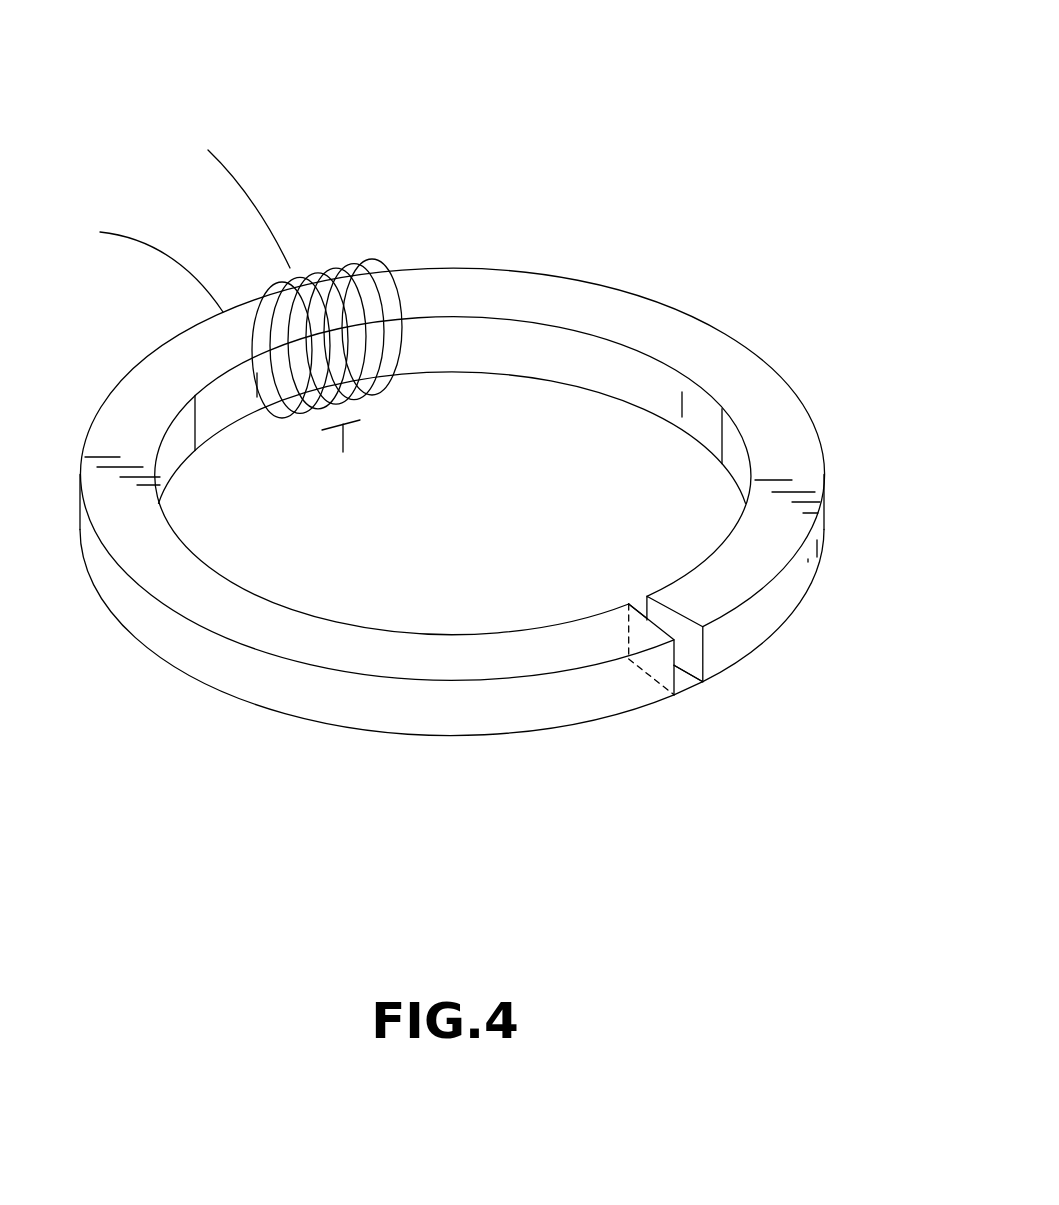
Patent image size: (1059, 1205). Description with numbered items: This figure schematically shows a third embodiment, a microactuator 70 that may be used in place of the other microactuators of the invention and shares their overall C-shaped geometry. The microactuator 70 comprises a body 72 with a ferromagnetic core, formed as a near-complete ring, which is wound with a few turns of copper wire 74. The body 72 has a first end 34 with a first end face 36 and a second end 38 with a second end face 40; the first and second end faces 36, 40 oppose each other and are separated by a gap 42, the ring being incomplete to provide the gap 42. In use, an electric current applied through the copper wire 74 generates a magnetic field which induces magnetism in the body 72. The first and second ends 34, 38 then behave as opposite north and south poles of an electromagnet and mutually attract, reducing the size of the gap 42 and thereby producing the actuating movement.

The microactuator 70 is at (499, 424).
The body 72 is at (700, 323).
The copper wire 74 is at (328, 262).
The first end 34 is at (676, 695).
The first end face 36 is at (647, 683).
The second end 38 is at (705, 670).
The second end face 40 is at (683, 637).
The gap 42 is at (687, 683).